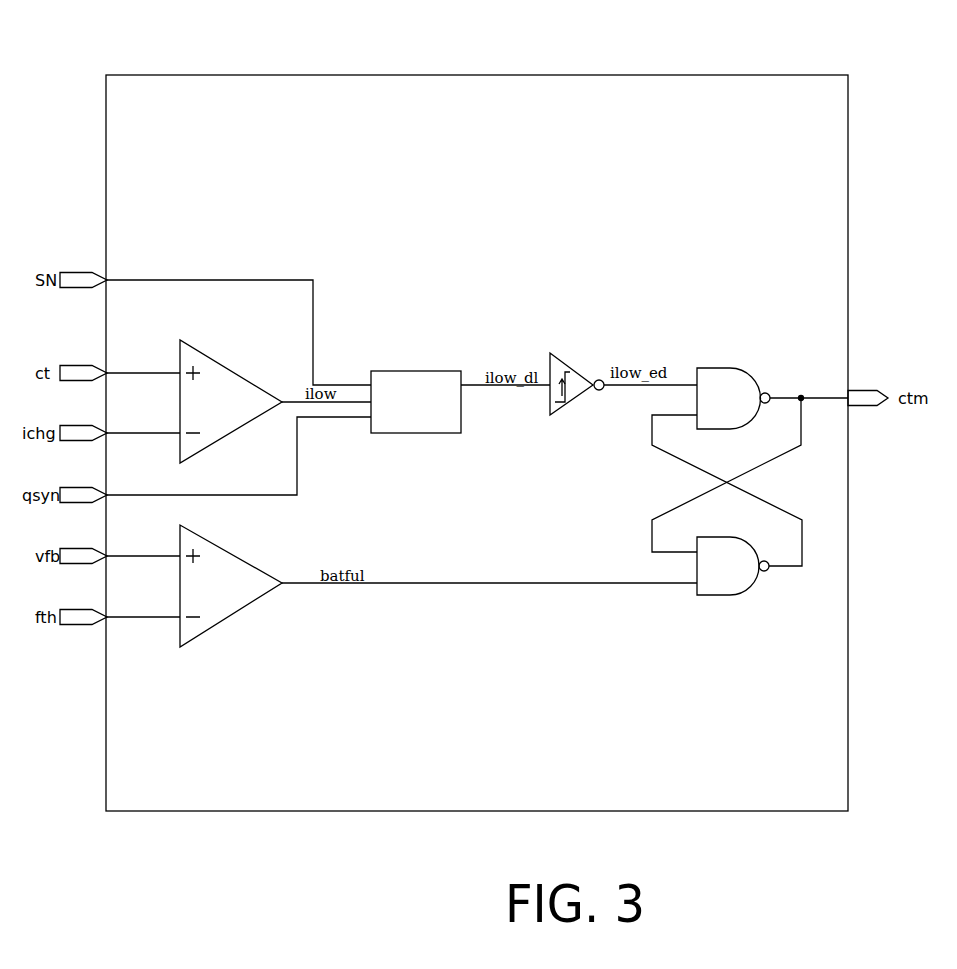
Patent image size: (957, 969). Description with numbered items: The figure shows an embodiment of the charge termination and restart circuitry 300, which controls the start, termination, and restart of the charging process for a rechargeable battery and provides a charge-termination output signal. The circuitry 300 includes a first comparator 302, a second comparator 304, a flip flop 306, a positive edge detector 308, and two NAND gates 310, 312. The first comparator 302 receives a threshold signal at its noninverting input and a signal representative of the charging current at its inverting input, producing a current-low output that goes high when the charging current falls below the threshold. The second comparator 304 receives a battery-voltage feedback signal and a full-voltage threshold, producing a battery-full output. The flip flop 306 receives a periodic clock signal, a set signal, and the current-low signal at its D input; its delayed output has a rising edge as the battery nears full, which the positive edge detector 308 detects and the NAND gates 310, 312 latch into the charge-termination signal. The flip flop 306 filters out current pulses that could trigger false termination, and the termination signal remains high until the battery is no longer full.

The charge termination and restart circuitry 300 is at (542, 75).
The comparator 302 is at (217, 357).
The comparator 304 is at (224, 543).
The flip flop 306 is at (377, 370).
The positive edge detector 308 is at (550, 353).
The NAND gate 310 is at (720, 367).
The NAND gate 312 is at (713, 595).